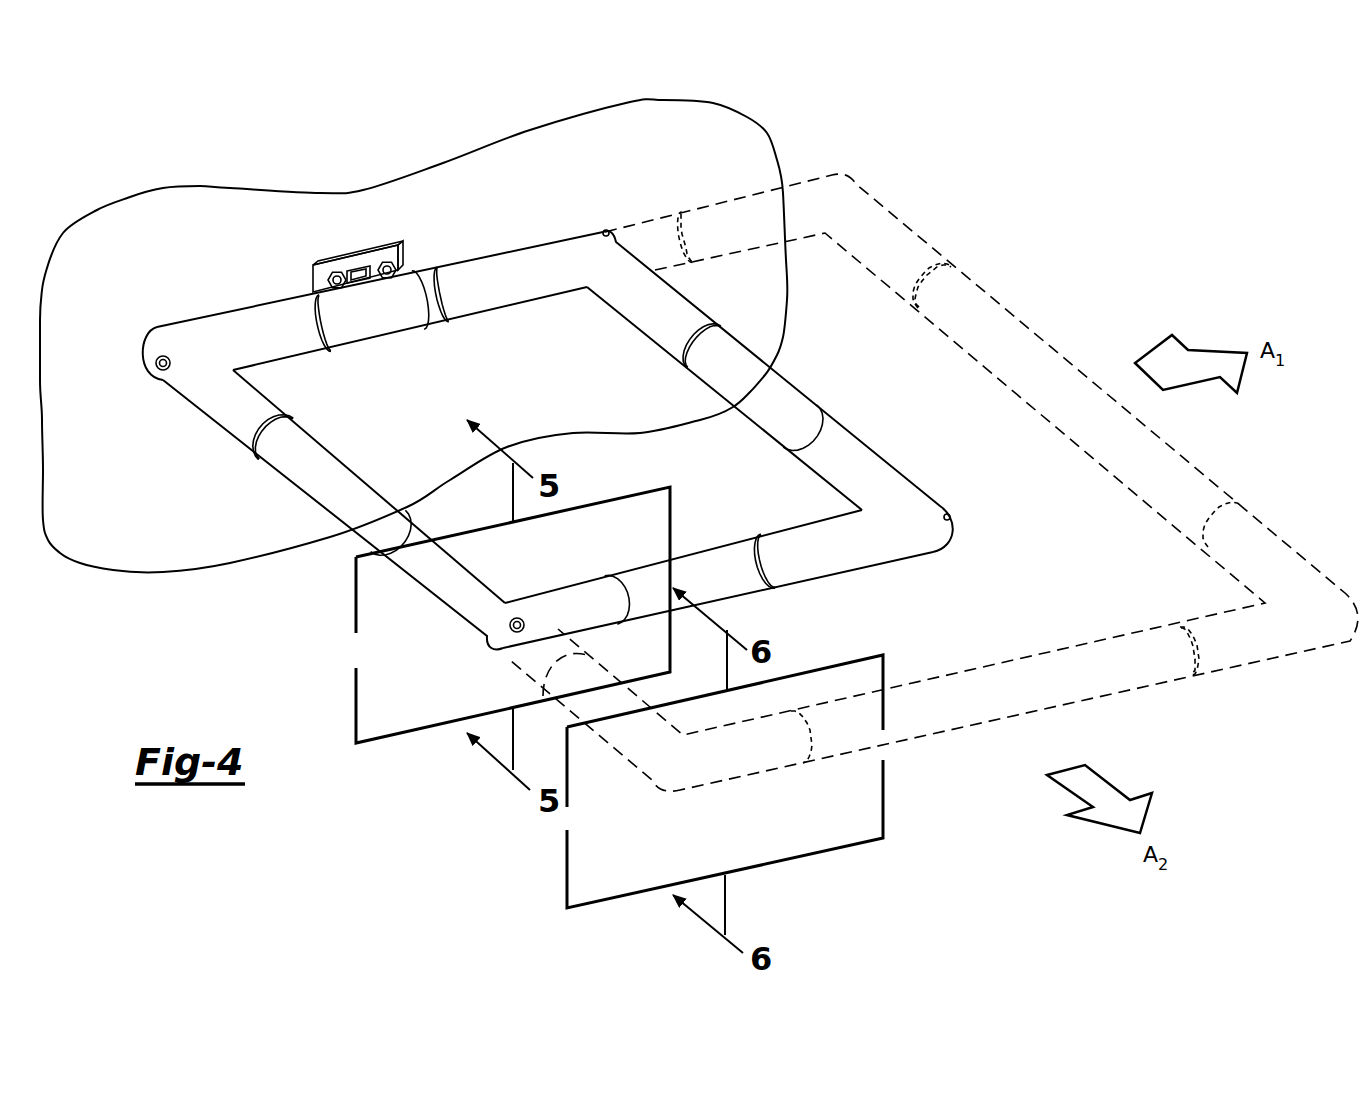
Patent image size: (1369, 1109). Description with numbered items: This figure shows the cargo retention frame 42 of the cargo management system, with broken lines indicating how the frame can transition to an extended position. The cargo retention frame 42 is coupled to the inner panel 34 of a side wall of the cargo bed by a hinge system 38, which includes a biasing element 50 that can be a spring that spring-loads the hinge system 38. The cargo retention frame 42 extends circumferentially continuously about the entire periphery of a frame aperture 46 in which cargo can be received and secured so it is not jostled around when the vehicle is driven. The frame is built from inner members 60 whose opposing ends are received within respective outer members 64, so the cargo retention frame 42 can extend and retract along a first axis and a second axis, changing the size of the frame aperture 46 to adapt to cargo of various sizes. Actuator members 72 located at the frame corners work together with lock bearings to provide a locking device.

The inner panel 34 is at (510, 192).
The hinge system 38 is at (327, 265).
The cargo retention frame 42 is at (663, 323).
The frame aperture 46 is at (531, 340).
The biasing element 50 is at (358, 262).
The inner members 60 is at (377, 317).
The outer member 64 is at (655, 304).
The actuator members 72 is at (577, 232).